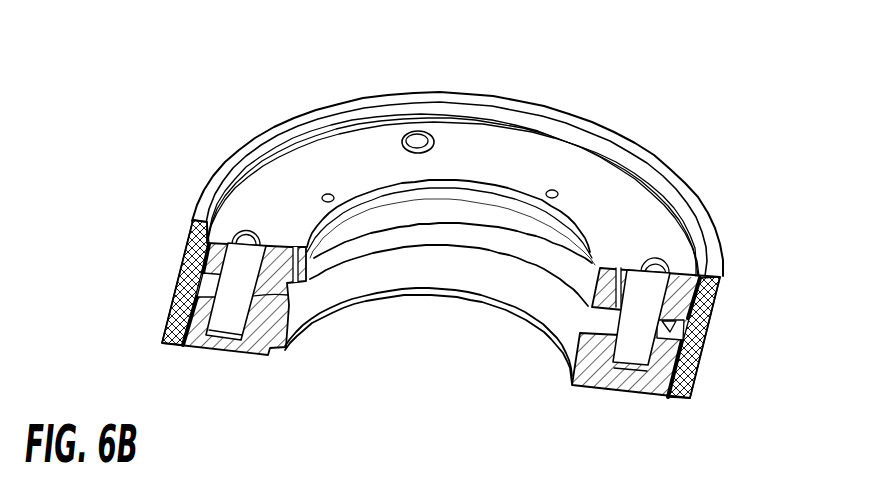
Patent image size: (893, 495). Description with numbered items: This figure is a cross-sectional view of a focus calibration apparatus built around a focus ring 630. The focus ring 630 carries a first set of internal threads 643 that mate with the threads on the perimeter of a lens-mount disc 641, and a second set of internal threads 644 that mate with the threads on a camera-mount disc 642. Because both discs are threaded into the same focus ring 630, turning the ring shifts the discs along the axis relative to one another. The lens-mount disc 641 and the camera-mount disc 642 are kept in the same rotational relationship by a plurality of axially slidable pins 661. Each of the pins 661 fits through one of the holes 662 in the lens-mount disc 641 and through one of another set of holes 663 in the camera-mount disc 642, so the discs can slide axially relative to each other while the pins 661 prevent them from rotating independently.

The focus ring 630 is at (714, 262).
The lens-mount disc 641 is at (563, 167).
The camera-mount disc 642 is at (518, 297).
The first set of internal threads 643 is at (188, 238).
The second set of internal threads 644 is at (693, 378).
The axially slidable pins 661 is at (418, 141).
The holes 662 is at (433, 149).
The holes 663 is at (284, 290).